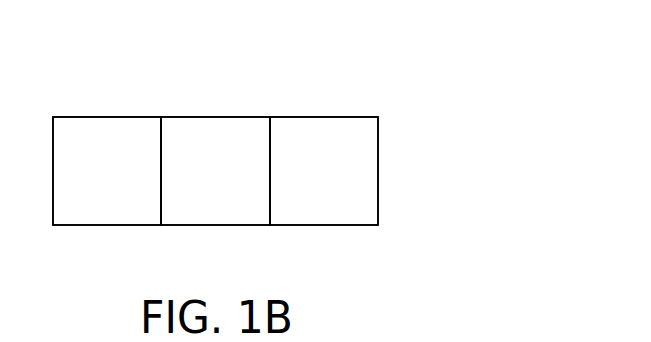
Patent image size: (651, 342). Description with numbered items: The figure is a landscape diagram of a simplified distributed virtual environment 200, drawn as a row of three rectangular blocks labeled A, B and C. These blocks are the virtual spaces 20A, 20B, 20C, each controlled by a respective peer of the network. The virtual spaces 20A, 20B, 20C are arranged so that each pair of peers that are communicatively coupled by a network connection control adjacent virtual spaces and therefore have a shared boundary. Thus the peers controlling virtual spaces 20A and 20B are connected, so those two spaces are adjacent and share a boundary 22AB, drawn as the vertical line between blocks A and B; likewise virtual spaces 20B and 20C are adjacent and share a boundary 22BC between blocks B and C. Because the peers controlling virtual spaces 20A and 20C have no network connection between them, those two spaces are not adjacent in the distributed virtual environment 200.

The distributed virtual environment 200 is at (444, 48).
The virtual space 20A is at (108, 117).
The virtual space 20B is at (217, 117).
The virtual space 20C is at (325, 117).
The shared boundary 22AB is at (162, 202).
The shared boundary 22BC is at (271, 202).